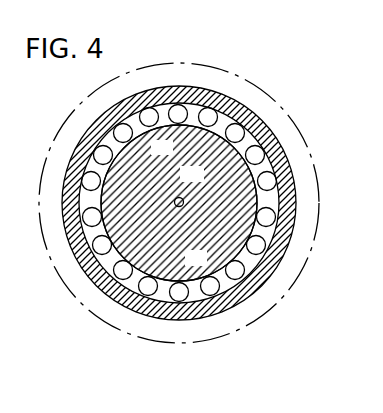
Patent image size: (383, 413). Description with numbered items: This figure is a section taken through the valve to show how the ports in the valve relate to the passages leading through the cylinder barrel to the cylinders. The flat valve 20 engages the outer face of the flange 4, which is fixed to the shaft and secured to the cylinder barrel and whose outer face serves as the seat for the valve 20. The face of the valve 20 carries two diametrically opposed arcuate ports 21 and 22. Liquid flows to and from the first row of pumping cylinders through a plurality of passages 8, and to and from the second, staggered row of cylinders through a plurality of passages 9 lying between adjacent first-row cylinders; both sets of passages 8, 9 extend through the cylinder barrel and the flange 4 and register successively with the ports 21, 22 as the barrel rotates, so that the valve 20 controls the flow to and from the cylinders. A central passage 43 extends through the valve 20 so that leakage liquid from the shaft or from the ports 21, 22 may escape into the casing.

The flange 4 is at (303, 240).
The passages 8 is at (267, 182).
The passages 9 is at (266, 218).
The flat valve 20 is at (262, 268).
The arcuate port 21 is at (179, 203).
The arcuate port 22 is at (179, 203).
The passage 43 is at (181, 198).